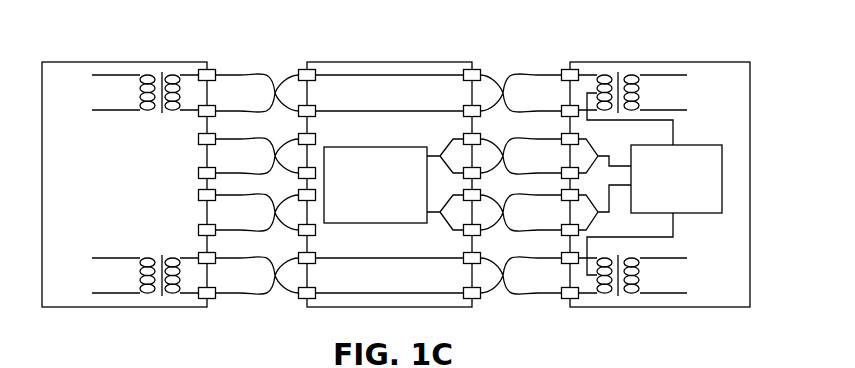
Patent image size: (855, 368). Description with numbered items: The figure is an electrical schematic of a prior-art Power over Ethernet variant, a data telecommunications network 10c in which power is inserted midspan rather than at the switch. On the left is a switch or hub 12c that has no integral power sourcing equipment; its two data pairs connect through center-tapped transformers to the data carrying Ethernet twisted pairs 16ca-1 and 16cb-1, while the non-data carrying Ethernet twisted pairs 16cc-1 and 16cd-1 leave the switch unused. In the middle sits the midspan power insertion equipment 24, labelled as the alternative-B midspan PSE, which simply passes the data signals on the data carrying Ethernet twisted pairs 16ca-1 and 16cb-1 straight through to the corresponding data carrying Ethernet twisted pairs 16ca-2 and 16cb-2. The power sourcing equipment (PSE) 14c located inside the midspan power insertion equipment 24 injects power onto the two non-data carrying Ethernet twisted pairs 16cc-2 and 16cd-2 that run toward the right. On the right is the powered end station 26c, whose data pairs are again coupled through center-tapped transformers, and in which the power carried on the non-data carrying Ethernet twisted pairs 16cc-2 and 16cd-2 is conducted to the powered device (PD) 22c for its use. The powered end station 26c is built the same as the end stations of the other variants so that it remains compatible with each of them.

The switch or hub 12c is at (178, 60).
The data telecommunications network 10c is at (481, 44).
The midspan power insertion equipment 24 is at (473, 305).
The power sourcing equipment (PSE) 14c is at (378, 136).
The data carrying Ethernet twisted pair 16ca-1 is at (245, 72).
The non-data carrying Ethernet twisted pair 16cc-1 is at (267, 131).
The non-data carrying Ethernet twisted pair 16cd-1 is at (267, 193).
The data carrying Ethernet twisted pair 16cb-1 is at (267, 255).
The data carrying Ethernet twisted pair 16ca-2 is at (532, 73).
The non-data carrying Ethernet twisted pair 16cc-2 is at (510, 135).
The non-data carrying Ethernet twisted pair 16cd-2 is at (510, 193).
The data carrying Ethernet twisted pair 16cb-2 is at (510, 255).
The powered device (PD) 22c is at (722, 181).
The powered end station 26c is at (738, 308).